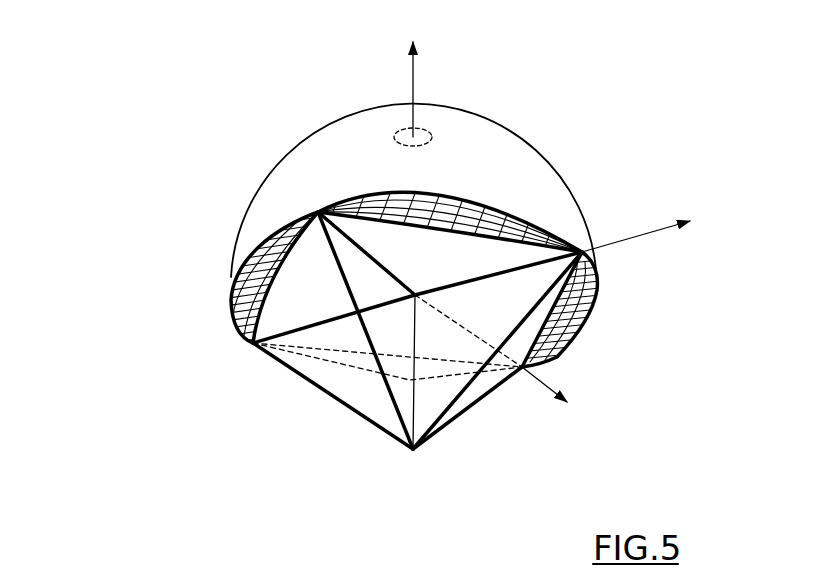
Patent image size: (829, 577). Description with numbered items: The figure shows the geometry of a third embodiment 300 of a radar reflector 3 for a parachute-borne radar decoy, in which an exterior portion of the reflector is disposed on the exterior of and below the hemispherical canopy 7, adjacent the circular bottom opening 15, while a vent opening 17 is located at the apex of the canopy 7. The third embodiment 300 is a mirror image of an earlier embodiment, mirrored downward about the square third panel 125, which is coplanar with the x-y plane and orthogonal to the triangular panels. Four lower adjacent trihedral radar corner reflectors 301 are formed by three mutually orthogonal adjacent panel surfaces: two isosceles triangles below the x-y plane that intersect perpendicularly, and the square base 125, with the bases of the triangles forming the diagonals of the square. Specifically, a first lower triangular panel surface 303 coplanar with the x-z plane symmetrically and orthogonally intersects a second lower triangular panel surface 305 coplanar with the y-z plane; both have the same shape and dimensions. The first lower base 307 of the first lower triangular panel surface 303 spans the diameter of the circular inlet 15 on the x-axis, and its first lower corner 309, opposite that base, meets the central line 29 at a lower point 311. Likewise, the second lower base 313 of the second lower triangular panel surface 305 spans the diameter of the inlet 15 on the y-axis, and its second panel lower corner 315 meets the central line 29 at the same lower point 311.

The radar reflector 3 is at (163, 395).
The canopy 7 is at (493, 118).
The bottom opening 15 is at (218, 348).
The vent opening 17 is at (418, 133).
The central line 29 is at (407, 402).
The third panel 125 is at (277, 313).
The third embodiment 300 is at (599, 90).
The lower adjacent trihedral radar corner reflectors 301 is at (257, 397).
The first lower triangular panel surface 303 is at (450, 387).
The second lower triangular panel surface 305 is at (400, 388).
The first lower base 307 is at (535, 262).
The first lower corner 309 is at (415, 455).
The lower point 311 is at (412, 452).
The second lower base 313 is at (280, 233).
The second panel lower corner 315 is at (415, 453).